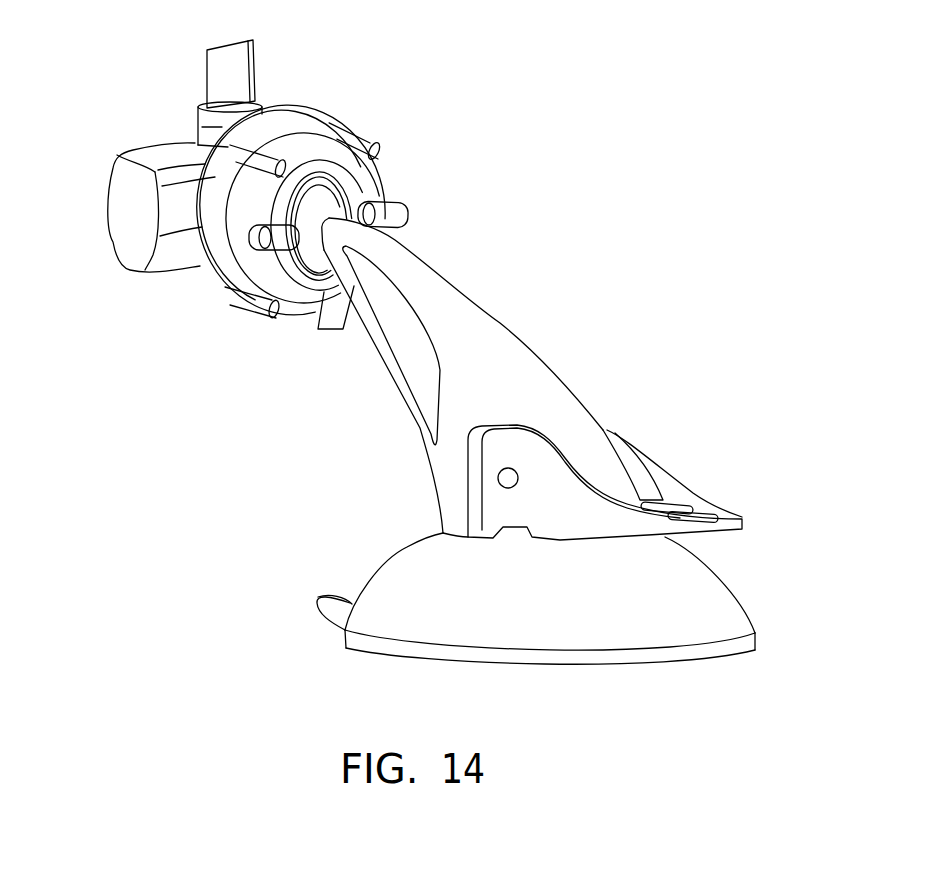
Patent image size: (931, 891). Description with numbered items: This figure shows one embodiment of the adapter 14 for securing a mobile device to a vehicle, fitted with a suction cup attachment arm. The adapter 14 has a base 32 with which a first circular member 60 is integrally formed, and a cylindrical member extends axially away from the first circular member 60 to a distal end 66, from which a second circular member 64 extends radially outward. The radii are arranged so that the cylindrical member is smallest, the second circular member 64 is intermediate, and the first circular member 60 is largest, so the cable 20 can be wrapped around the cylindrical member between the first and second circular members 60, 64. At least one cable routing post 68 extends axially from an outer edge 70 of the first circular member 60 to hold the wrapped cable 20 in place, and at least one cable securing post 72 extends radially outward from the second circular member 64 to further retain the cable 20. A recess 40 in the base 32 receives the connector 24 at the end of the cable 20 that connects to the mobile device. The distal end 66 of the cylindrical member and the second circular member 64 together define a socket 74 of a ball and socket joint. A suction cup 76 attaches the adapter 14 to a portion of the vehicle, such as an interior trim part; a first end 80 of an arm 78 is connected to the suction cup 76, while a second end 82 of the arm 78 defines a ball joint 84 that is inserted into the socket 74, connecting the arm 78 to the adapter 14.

The adapter 14 is at (335, 60).
The cable 20 is at (330, 322).
The connector 24 is at (225, 127).
The base 32 is at (110, 250).
The recess 40 is at (187, 152).
The first circular member 60 is at (303, 118).
The second circular member 64 is at (360, 192).
The distal end 66 is at (295, 318).
The cable routing post 68 is at (382, 152).
The outer edge 70 is at (225, 172).
The cable securing post 72 is at (397, 220).
The socket 74 is at (330, 172).
The suction cup 76 is at (665, 617).
The arm 78 is at (520, 390).
The first end 80 is at (729, 492).
The second end 82 is at (373, 337).
The ball joint 84 is at (387, 230).